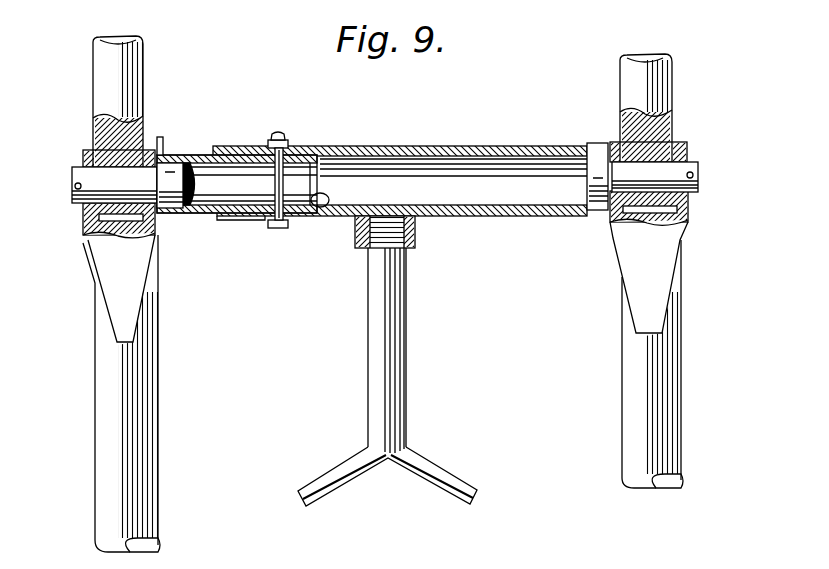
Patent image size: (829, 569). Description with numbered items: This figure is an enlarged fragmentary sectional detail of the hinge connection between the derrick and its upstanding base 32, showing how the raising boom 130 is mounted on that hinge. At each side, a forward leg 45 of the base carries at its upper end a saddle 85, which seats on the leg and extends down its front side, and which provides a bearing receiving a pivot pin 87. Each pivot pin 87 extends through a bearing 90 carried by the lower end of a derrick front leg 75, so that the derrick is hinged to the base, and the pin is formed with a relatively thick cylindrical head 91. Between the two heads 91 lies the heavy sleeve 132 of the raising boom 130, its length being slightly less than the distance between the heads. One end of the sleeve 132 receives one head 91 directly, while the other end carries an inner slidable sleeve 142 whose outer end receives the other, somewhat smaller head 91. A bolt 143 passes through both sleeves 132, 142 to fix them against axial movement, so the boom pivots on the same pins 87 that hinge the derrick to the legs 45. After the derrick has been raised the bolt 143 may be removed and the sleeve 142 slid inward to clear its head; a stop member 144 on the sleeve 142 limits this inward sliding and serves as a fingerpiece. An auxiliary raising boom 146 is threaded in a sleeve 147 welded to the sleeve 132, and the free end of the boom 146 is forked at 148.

The upstanding base 32 is at (692, 429).
The forward legs 45 is at (96, 392).
The front legs 75 is at (100, 88).
The saddle 85 is at (120, 305).
The pivot pin 87 is at (70, 200).
The bearings 90 is at (83, 238).
The cylindrical heads 91 is at (171, 214).
The raising boom 130 is at (372, 157).
The sleeve 132 is at (480, 136).
The inner slidable sleeve 142 is at (324, 208).
The bolt 143 is at (278, 132).
The stop member 144 is at (161, 138).
The auxiliary raising boom 146 is at (407, 340).
The sleeve 147 is at (415, 240).
The fork 148 is at (352, 480).